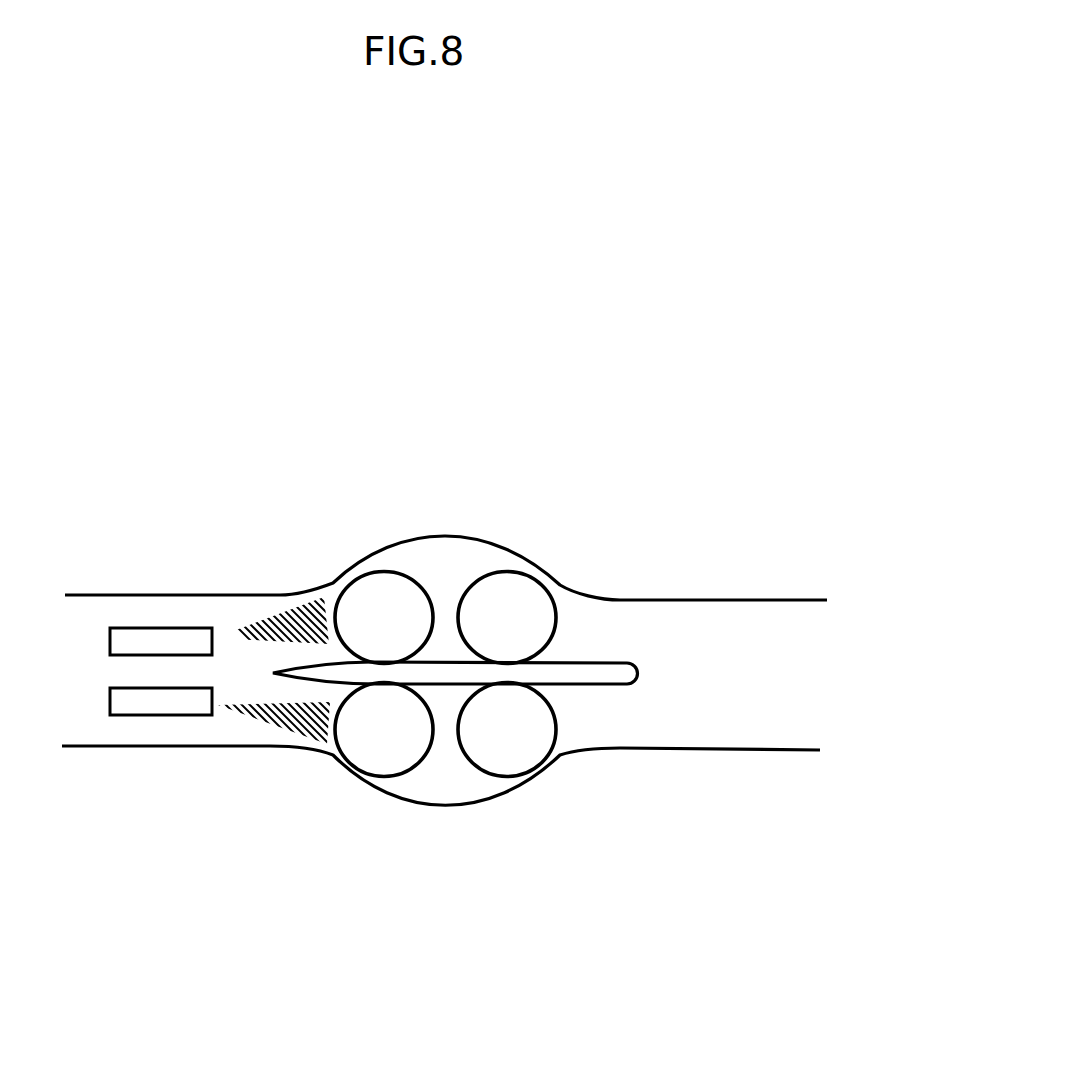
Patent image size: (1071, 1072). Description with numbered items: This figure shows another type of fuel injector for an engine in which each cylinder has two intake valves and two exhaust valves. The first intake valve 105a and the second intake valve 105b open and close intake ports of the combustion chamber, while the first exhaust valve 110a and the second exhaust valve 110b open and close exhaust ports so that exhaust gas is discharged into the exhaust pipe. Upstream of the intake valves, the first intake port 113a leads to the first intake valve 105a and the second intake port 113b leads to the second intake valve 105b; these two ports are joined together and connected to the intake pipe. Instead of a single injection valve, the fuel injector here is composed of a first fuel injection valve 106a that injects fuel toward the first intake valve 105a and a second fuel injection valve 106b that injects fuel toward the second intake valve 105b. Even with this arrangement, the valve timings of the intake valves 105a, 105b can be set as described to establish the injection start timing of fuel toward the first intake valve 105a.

The first intake valve 105a is at (385, 583).
The second intake valve 105b is at (368, 758).
The first exhaust valve 110a is at (518, 598).
The second exhaust valve 110b is at (518, 753).
The first fuel injection valve 106a is at (155, 628).
The second fuel injection valve 106b is at (127, 713).
The first intake port 113a is at (247, 598).
The second intake port 113b is at (277, 745).